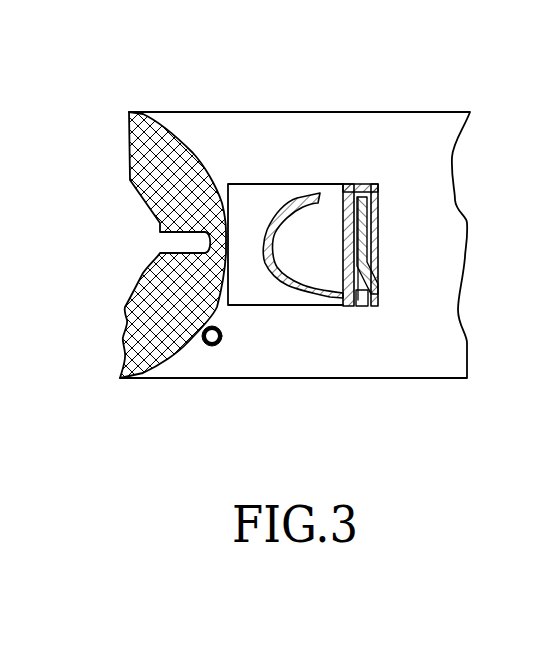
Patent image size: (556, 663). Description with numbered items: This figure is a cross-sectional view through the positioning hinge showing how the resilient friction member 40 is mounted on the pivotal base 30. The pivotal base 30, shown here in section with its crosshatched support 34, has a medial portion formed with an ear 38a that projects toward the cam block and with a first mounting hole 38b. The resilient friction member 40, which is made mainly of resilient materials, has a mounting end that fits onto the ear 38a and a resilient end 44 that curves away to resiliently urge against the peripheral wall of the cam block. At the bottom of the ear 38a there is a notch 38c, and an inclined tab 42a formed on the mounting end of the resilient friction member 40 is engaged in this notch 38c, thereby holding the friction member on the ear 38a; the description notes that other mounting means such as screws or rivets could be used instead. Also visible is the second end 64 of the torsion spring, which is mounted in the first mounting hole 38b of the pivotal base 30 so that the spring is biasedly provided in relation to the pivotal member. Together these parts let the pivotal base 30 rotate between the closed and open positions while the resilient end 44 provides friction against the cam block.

The pivotal base 30 is at (310, 100).
The support 34 is at (208, 128).
The resilient friction member 40 is at (380, 197).
The resilient end 44 is at (263, 232).
The inclined tab 42a is at (366, 246).
The ear 38a is at (357, 306).
The first mounting hole 38b is at (209, 348).
The notch 38c is at (378, 289).
The second end 64 is at (202, 347).